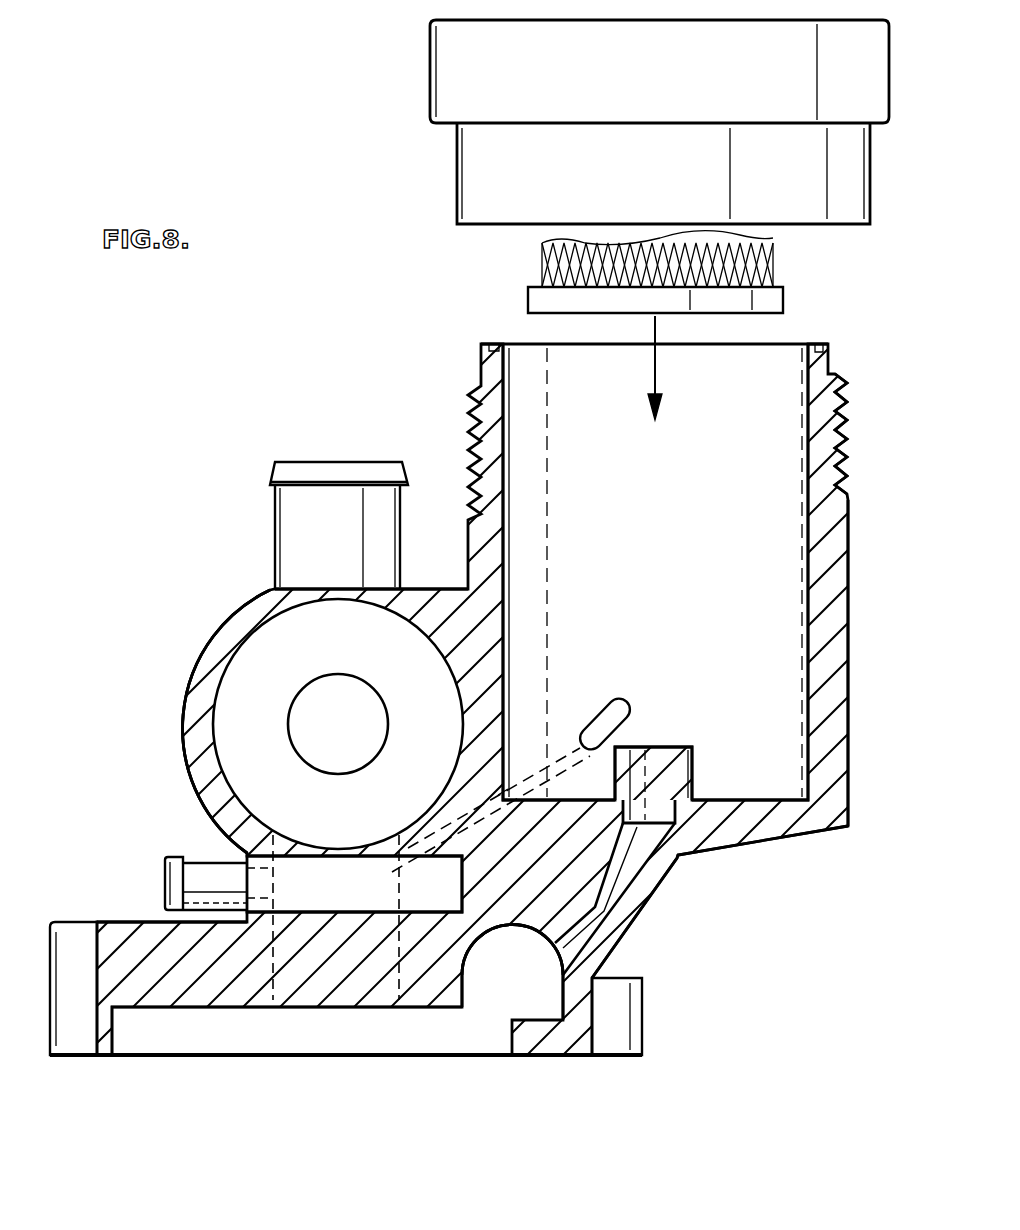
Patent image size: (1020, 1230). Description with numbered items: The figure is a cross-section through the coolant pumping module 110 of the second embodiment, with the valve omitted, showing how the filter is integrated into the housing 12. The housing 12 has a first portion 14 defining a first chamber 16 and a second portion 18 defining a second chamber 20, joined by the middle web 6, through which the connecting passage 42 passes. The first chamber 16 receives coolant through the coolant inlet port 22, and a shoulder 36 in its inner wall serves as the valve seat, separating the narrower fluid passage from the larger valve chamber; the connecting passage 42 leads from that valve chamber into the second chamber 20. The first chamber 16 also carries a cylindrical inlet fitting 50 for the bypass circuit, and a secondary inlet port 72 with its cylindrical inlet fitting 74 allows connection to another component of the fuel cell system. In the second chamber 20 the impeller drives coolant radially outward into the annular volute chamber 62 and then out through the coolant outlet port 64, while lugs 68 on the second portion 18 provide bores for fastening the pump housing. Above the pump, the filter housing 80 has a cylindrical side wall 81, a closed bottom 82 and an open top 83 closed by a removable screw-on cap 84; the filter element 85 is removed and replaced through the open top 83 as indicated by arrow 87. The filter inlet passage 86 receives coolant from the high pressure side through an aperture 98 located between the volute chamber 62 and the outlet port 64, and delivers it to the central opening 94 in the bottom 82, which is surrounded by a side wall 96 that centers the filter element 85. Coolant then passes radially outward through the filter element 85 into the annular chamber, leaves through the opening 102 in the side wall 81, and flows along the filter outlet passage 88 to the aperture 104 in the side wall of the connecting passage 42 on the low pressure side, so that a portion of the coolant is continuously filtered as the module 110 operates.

The web portion 6 is at (305, 900).
The housing 12 is at (183, 742).
The first portion 14 is at (248, 607).
The first chamber 16 is at (237, 683).
The second portion 18 is at (48, 1035).
The second chamber 20 is at (172, 1032).
The coolant inlet port 22 is at (324, 727).
The shoulder 36 is at (324, 649).
The connecting passage 42 is at (325, 975).
The cylindrical inlet fitting 50 is at (270, 480).
The annular volute chamber 62 is at (432, 1035).
The coolant outlet port 64 is at (498, 990).
The lug 68 is at (642, 1010).
The secondary inlet port 72 is at (270, 880).
The cylindrical inlet fitting 74 is at (170, 878).
The filter housing 80 is at (848, 616).
The cylindrical side wall 81 is at (848, 542).
The closed bottom 82 is at (760, 845).
The open top 83 is at (765, 356).
The removable screw-on cap 84 is at (430, 82).
The filter element 85 is at (773, 255).
The filter inlet passage 86 is at (637, 867).
The arrow 87 is at (650, 362).
The filter outlet passage 88 is at (575, 745).
The central opening 94 is at (657, 757).
The side wall 96 is at (690, 782).
The aperture 98 is at (557, 953).
The opening 102 is at (628, 706).
The aperture 104 is at (400, 858).
The coolant pumping module 110 is at (213, 618).